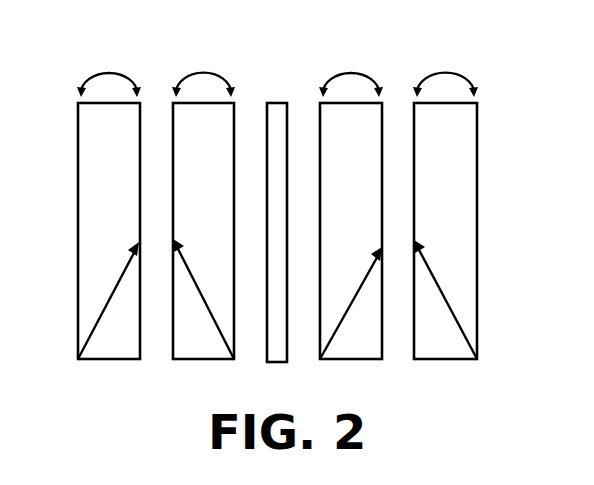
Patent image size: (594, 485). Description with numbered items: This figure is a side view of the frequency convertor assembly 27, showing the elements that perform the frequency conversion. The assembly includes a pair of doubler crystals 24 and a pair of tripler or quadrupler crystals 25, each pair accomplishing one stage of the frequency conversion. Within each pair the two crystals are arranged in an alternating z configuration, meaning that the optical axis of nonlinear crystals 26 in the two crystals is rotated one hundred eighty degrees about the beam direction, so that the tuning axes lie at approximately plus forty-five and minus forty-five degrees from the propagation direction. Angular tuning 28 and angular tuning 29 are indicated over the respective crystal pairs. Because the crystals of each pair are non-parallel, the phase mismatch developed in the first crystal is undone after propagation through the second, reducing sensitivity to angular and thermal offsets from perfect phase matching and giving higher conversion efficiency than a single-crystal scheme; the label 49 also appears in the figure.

The doubler crystals 24 is at (363, 151).
The tripler or quadrupler crystals 25 is at (120, 151).
The optical axis of nonlinear crystals 26 is at (122, 275).
The frequency convertor assembly 27 is at (413, 232).
The angular tuning 28 is at (196, 77).
The angular tuning 29 is at (442, 77).
The light source unit 49 is at (510, 212).